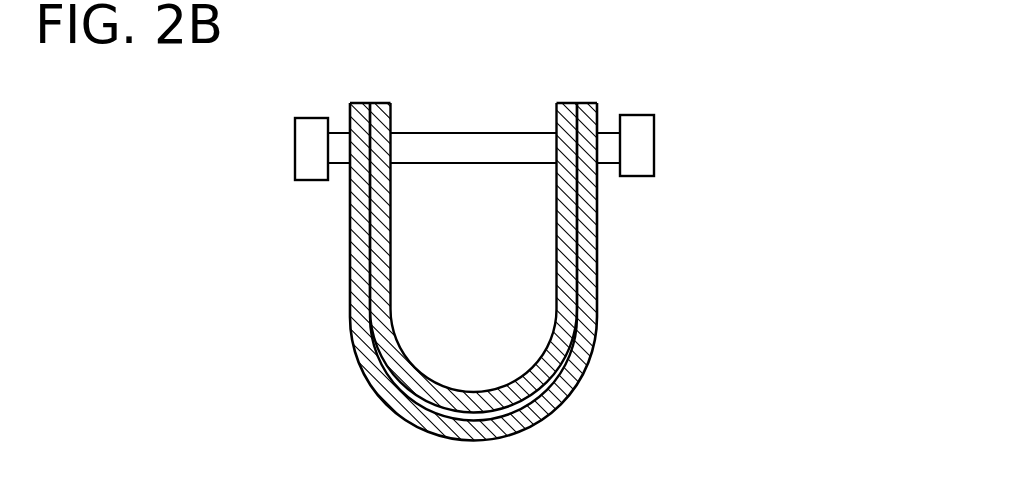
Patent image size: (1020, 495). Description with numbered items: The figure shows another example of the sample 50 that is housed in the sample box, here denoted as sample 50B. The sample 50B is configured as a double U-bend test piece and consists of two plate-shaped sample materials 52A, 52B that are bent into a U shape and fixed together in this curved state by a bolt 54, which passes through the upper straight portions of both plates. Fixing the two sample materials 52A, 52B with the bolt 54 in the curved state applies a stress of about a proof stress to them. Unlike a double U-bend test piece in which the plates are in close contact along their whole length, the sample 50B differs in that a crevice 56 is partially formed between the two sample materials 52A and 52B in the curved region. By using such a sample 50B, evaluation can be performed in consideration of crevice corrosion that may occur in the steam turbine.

The sample 50B is at (686, 132).
The sample 50 is at (469, 278).
The sample material 52A is at (516, 388).
The sample material 52B is at (597, 306).
The bolt 54 is at (449, 133).
The crevice 56 is at (535, 406).